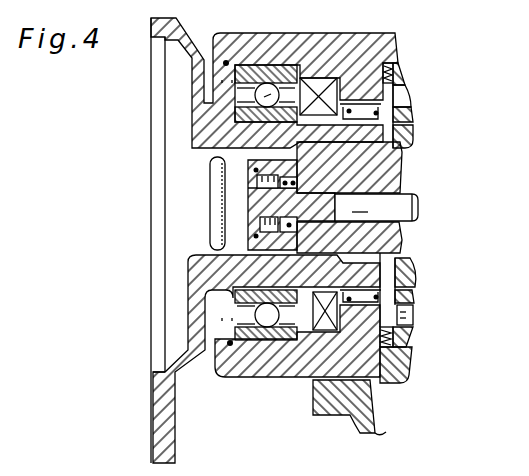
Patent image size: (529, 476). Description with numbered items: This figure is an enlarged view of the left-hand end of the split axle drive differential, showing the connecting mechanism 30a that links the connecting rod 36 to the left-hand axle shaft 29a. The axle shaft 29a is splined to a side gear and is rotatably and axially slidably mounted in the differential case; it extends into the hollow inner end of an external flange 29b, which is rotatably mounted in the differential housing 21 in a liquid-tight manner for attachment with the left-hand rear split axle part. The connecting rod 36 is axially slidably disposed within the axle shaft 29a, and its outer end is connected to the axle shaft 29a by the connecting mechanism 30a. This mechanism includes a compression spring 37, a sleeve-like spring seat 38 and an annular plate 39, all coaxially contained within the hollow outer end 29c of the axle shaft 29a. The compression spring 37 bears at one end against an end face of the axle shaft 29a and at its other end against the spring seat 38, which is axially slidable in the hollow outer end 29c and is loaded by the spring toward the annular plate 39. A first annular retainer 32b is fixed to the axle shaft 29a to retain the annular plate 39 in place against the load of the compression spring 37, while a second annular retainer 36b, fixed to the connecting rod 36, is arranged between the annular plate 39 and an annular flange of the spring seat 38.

The differential housing 21 is at (263, 378).
The axle shaft 29a is at (403, 243).
The external flange 29b is at (157, 418).
The hollow outer end 29c is at (286, 250).
The connecting mechanism 30a is at (236, 186).
The first annular retainer 32b is at (282, 83).
The connecting rod 36 is at (409, 196).
The second annular retainer 36b is at (265, 176).
The compression spring 37 is at (300, 186).
The spring seat 38 is at (266, 172).
The annular plate 39 is at (254, 233).